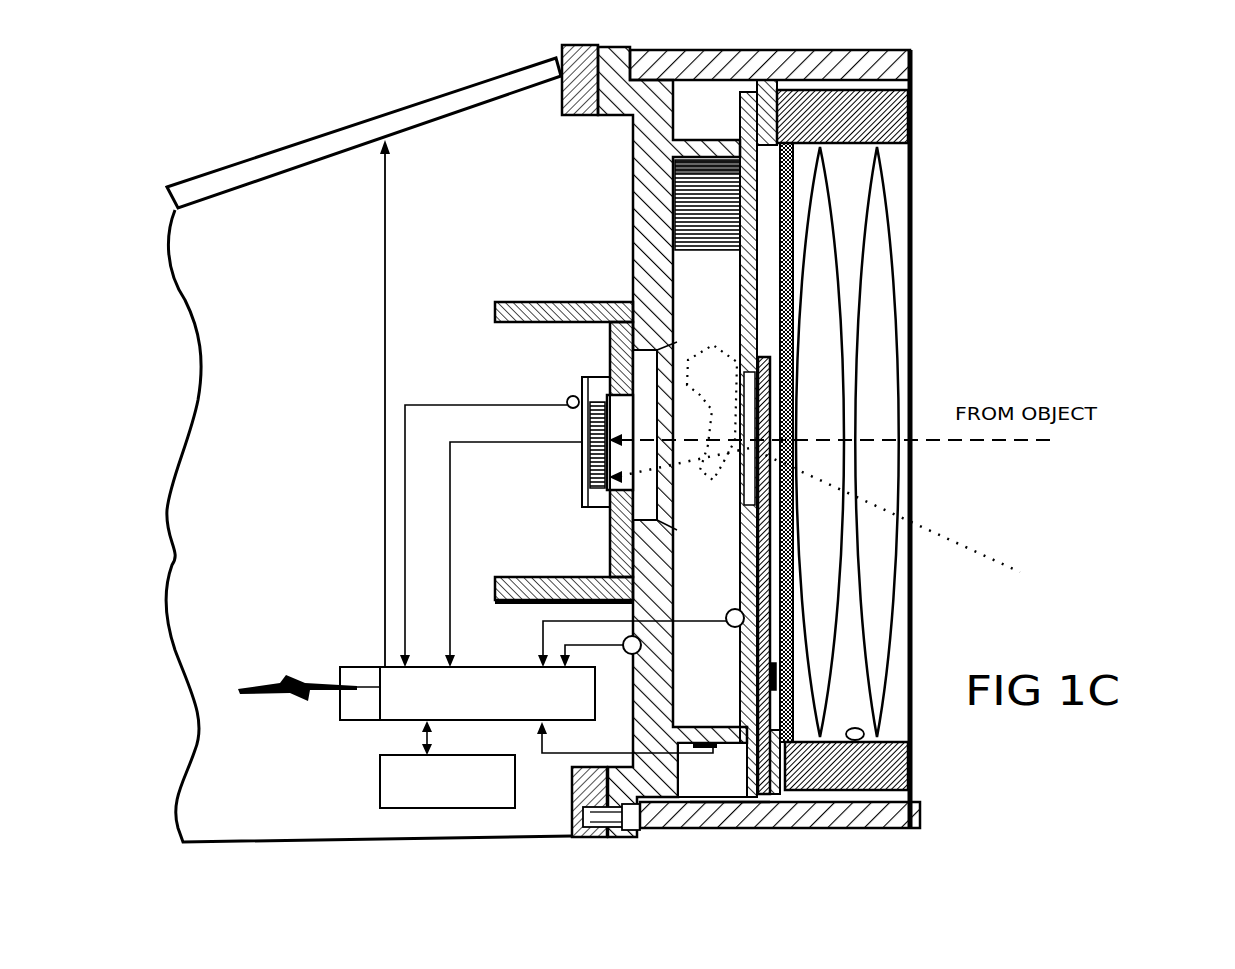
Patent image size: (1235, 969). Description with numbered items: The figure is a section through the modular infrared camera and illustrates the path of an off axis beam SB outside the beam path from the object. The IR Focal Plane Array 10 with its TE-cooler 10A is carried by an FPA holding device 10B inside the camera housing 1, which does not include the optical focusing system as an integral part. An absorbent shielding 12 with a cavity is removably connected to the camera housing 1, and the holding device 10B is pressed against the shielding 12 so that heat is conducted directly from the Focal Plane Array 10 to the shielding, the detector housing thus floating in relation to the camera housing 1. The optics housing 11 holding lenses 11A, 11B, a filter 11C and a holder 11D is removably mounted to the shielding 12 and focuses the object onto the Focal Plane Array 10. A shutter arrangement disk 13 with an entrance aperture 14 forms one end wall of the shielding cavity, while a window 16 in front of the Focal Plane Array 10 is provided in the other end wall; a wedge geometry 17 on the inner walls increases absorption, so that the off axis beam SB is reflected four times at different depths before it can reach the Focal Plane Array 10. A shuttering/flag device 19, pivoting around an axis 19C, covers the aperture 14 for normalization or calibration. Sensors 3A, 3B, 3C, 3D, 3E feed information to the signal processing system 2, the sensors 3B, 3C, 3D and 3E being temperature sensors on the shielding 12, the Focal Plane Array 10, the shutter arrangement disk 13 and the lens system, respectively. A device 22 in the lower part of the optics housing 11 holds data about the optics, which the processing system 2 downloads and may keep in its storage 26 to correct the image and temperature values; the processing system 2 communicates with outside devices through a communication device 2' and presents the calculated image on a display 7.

The camera housing 1 is at (228, 330).
The signal processing system 2 is at (467, 669).
The communication device 2' is at (309, 660).
The sensor 3A is at (715, 748).
The temperature sensor on shielding device 3B is at (630, 655).
The temperature sensor at FPA 3C is at (567, 398).
The temperature sensor on shutter arrangement disk 3D is at (728, 628).
The temperature sensor on lens system 3E is at (864, 734).
The display 7 is at (285, 148).
The IR Focal Plane Array 10 is at (590, 507).
The TE-cooler 10A is at (590, 477).
The FPA holding device 10B is at (520, 302).
The optics housing 11 is at (912, 62).
The lens 11A is at (880, 185).
The lens 11B is at (880, 245).
The filter 11C is at (800, 300).
The holder 11D is at (905, 118).
The absorbent shielding 12 is at (630, 184).
The shutter arrangement disk 13 is at (745, 590).
The entrance aperture 14 is at (745, 462).
The window 16 is at (673, 398).
The wedge geometry 17 is at (706, 225).
The shuttering/flag device 19 is at (757, 523).
The axis 19C is at (745, 665).
The device for optics data 22 is at (701, 812).
The storage 26 is at (380, 779).
The off axis beam SB is at (966, 552).